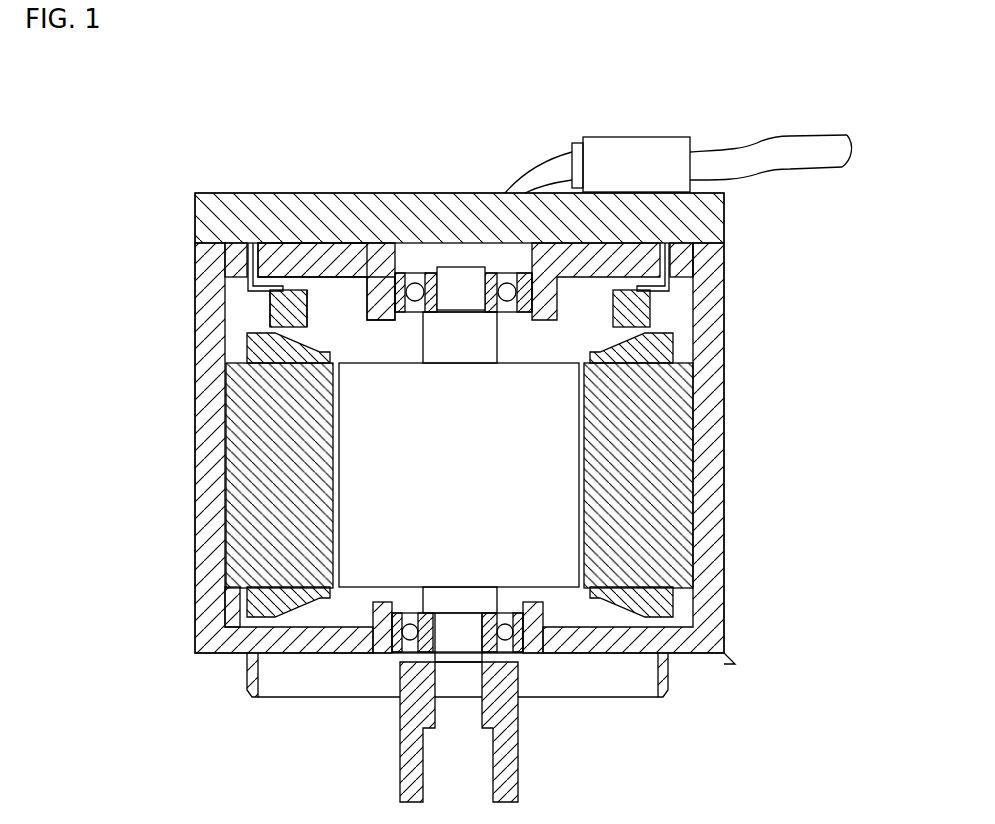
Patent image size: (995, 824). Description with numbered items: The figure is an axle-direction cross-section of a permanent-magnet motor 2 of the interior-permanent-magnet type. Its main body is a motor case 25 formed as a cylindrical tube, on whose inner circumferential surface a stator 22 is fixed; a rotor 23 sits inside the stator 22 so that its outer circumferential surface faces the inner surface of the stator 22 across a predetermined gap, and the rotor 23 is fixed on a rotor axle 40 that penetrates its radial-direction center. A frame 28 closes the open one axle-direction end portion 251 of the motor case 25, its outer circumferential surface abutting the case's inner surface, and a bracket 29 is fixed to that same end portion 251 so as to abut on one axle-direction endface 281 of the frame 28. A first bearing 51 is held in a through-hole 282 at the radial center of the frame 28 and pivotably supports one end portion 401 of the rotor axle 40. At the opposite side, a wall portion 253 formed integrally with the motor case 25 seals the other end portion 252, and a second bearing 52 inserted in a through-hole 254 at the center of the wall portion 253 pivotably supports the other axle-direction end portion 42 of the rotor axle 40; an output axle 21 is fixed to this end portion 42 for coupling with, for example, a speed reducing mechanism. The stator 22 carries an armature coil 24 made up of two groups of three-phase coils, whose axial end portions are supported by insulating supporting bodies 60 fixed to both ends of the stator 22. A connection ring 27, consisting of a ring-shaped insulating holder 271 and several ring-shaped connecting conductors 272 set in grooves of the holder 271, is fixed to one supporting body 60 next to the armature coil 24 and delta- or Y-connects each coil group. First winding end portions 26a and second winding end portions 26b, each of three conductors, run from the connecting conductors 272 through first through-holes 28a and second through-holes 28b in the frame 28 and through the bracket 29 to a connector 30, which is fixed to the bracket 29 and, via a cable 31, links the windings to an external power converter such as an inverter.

The permanent-magnet motor 2 is at (735, 598).
The output axle 21 is at (400, 740).
The stator 22 is at (683, 397).
The rotor 23 is at (345, 482).
The armature coil 24 is at (250, 350).
The motor case 25 is at (724, 492).
The one axle-direction end portion 251 is at (723, 260).
The other end portion 252 is at (735, 662).
The wall portion 253 is at (597, 653).
The through-hole 254 is at (367, 635).
The first winding end portions 26a is at (669, 285).
The second winding end portions 26b is at (250, 287).
The connection ring 27 is at (655, 318).
The holder 271 is at (272, 300).
The connecting conductors 272 is at (285, 325).
The frame 28 is at (248, 245).
The first through-holes 28a is at (682, 280).
The second through-holes 28b is at (236, 268).
The one axle-direction endface 281 is at (348, 250).
The through-hole 282 is at (400, 262).
The bracket 29 is at (250, 193).
The connector 30 is at (645, 137).
The cable 31 is at (740, 147).
The rotor axle 40 is at (443, 343).
The shaft upper end 401 is at (455, 278).
The other axle-direction end portion 42 is at (453, 675).
The first bearing 51 is at (422, 273).
The second bearing 52 is at (517, 652).
The supporting body 60 is at (668, 337).